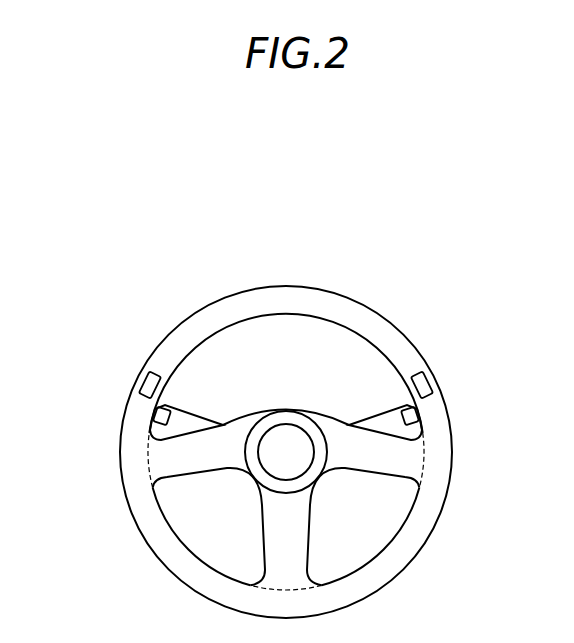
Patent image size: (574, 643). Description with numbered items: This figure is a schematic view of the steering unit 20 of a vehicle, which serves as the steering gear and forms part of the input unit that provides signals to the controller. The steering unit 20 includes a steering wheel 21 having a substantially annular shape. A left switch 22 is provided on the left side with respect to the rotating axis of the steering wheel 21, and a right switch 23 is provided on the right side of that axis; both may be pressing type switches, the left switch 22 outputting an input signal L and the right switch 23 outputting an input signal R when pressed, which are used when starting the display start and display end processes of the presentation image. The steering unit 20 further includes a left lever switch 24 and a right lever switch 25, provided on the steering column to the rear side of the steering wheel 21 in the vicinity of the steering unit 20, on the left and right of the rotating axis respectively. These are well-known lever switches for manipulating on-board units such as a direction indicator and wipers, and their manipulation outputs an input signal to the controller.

The steering unit 20 is at (357, 300).
The steering wheel 21 is at (390, 342).
The left switch 22 is at (143, 380).
The right switch 23 is at (420, 380).
The left lever switch 24 is at (170, 421).
The right lever switch 25 is at (400, 419).